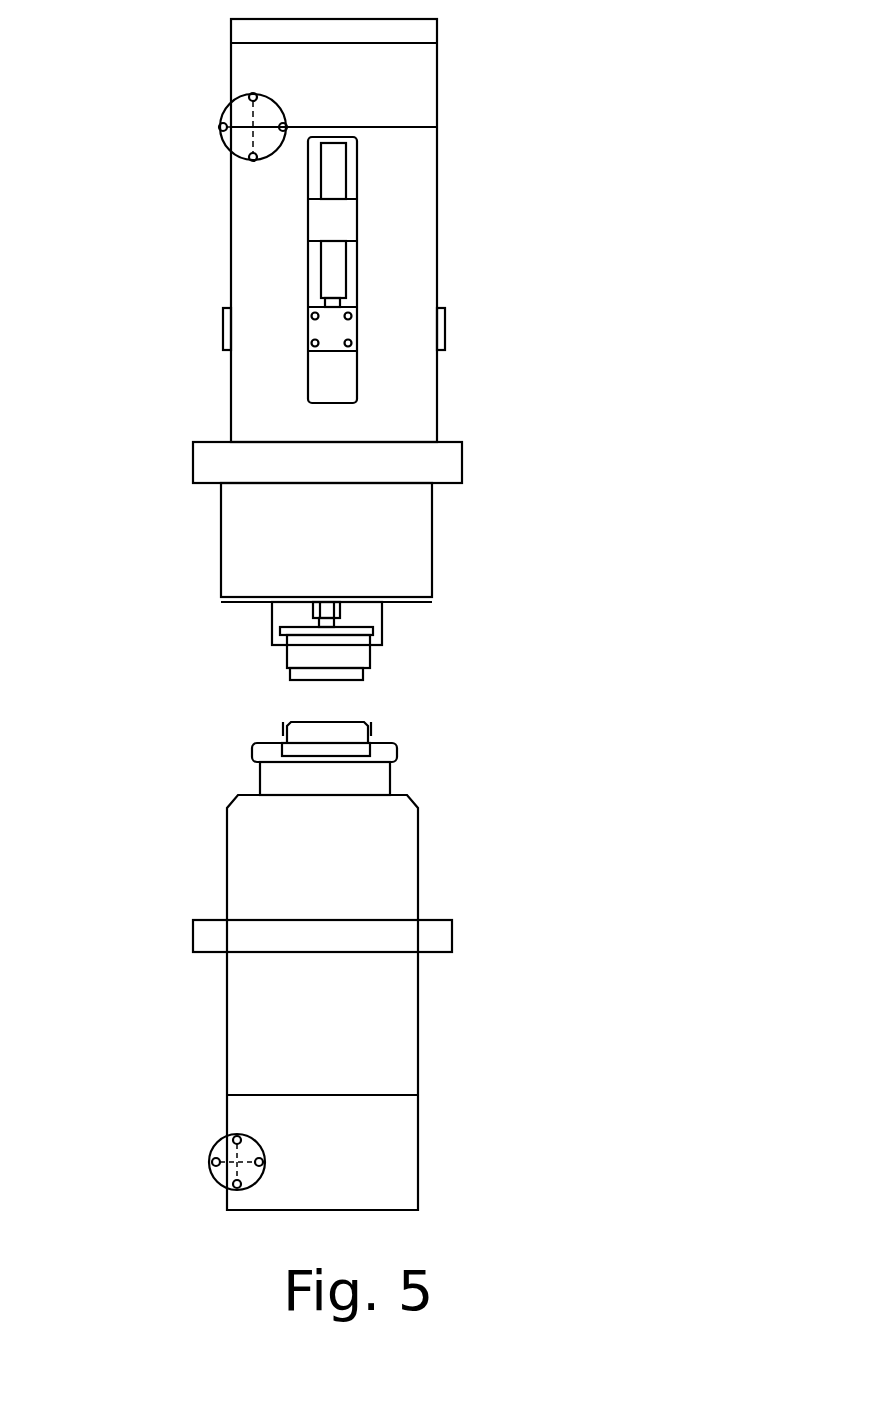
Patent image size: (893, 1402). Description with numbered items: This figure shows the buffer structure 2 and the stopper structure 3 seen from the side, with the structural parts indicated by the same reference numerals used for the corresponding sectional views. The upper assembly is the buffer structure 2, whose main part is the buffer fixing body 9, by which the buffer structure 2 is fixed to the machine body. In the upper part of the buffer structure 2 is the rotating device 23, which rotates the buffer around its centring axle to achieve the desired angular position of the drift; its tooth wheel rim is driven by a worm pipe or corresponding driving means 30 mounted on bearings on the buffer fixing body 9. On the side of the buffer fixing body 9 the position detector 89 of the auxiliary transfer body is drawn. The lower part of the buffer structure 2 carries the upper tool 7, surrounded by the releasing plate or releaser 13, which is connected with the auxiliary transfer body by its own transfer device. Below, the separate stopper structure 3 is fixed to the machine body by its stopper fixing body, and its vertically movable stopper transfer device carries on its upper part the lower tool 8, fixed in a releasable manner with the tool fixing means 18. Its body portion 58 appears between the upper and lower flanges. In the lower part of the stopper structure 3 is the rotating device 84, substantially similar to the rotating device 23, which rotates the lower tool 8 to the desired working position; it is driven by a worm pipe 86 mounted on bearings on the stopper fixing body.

The buffer structure 2 is at (486, 222).
The rotating device 23 is at (428, 80).
The buffer fixing body 9 is at (422, 170).
The driving means 30 is at (240, 113).
The position detector 89 is at (314, 217).
The releaser 13 is at (373, 618).
The upper tool 7 is at (295, 652).
The lower tool 8 is at (358, 733).
The tool fixing means 18 is at (242, 780).
The lower housing body 58 is at (400, 837).
The stopper structure 3 is at (479, 937).
The rotating device 84 is at (409, 1150).
The worm pipe 86 is at (222, 1145).